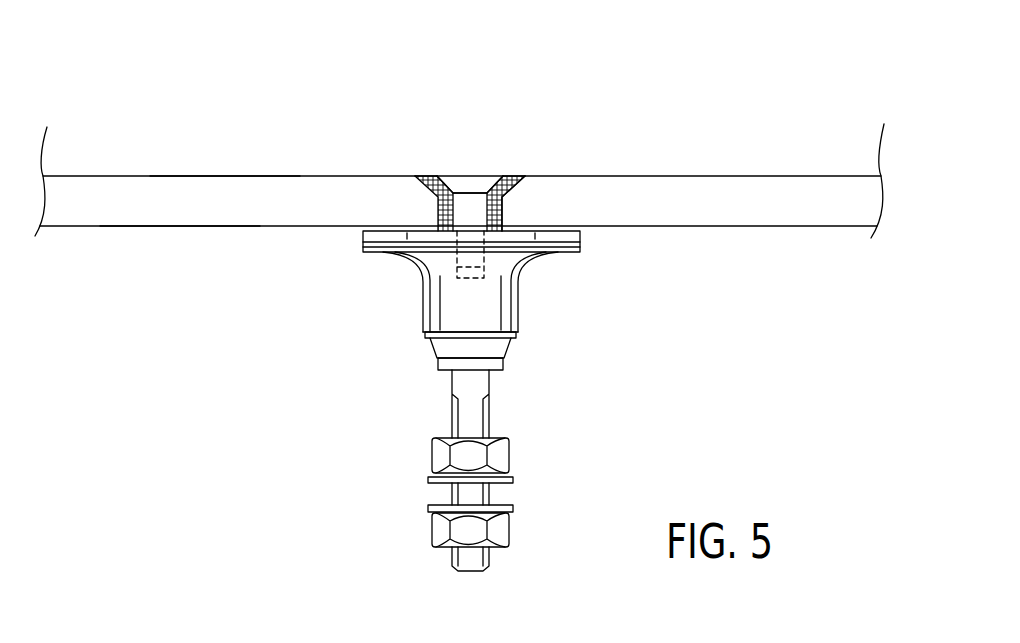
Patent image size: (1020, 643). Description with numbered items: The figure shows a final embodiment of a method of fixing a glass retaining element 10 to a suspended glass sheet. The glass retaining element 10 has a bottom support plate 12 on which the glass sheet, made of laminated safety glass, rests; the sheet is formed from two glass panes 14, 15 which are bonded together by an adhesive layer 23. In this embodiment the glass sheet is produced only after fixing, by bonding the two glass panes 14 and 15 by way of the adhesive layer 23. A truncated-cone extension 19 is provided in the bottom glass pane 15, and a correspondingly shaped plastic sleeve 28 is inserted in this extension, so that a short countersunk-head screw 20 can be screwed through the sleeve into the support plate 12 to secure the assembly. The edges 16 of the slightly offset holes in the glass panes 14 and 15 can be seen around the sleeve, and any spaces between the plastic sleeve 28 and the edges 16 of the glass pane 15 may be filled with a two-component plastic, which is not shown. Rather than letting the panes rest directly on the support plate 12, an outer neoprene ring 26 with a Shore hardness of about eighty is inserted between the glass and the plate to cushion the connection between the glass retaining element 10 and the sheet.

The glass retaining element 10 is at (423, 313).
The bottom support plate 12 is at (390, 252).
The glass pane 14 is at (148, 157).
The glass pane 15 is at (133, 207).
The edges of the holes 16 is at (437, 210).
The truncated-cone extension 19 is at (525, 190).
The countersunk-head screw 20 is at (475, 187).
The adhesive layer 23 is at (227, 176).
The outer neoprene ring 26 is at (378, 236).
The plastic sleeve 28 is at (488, 232).